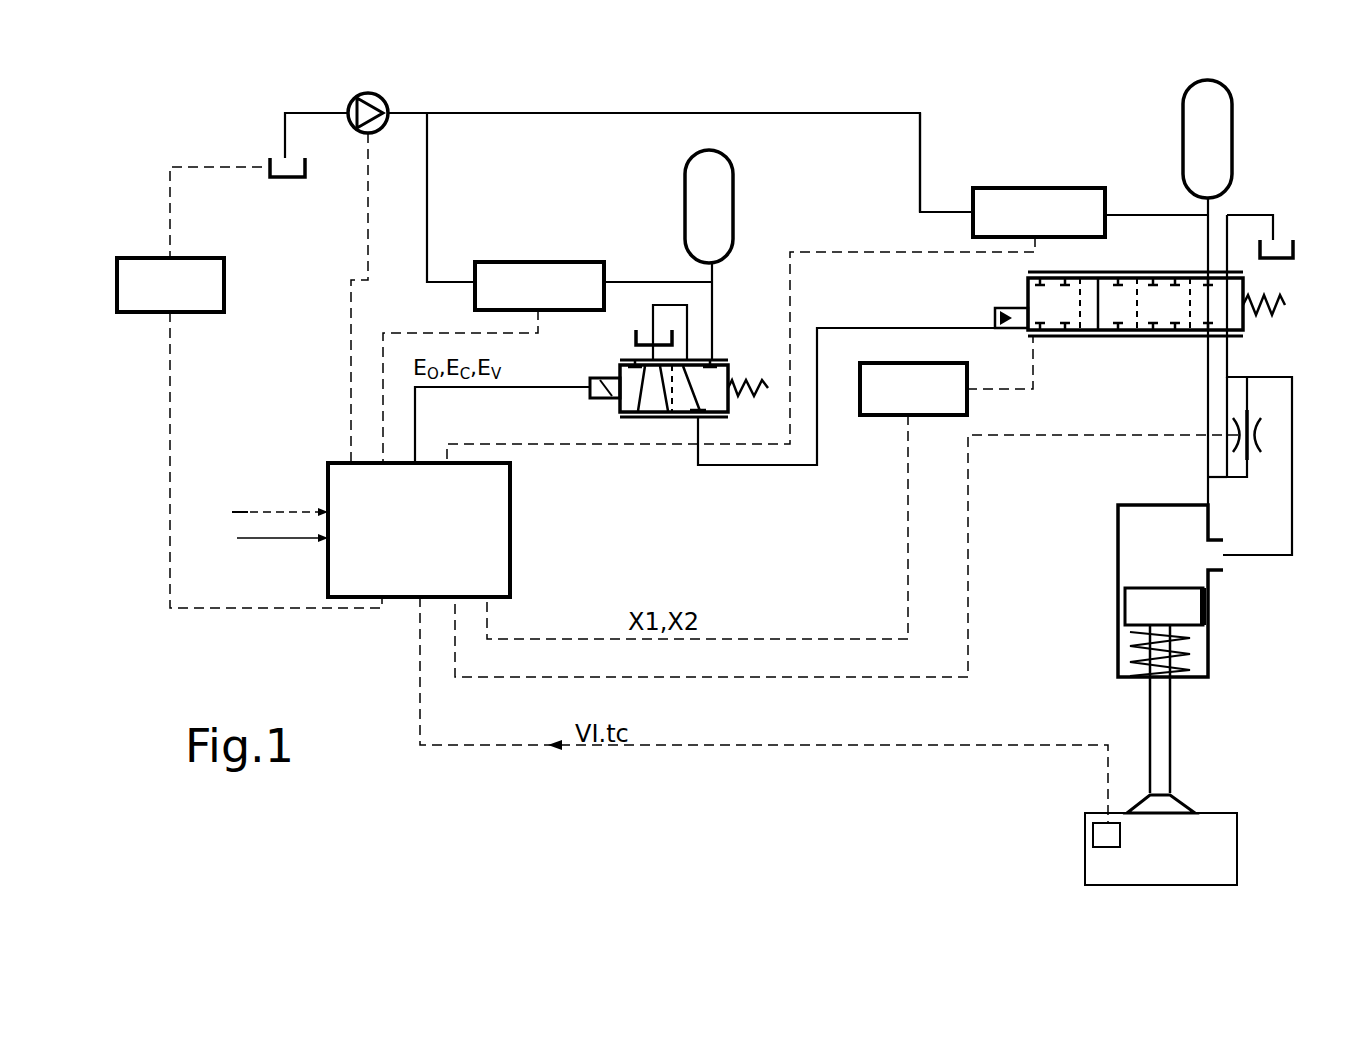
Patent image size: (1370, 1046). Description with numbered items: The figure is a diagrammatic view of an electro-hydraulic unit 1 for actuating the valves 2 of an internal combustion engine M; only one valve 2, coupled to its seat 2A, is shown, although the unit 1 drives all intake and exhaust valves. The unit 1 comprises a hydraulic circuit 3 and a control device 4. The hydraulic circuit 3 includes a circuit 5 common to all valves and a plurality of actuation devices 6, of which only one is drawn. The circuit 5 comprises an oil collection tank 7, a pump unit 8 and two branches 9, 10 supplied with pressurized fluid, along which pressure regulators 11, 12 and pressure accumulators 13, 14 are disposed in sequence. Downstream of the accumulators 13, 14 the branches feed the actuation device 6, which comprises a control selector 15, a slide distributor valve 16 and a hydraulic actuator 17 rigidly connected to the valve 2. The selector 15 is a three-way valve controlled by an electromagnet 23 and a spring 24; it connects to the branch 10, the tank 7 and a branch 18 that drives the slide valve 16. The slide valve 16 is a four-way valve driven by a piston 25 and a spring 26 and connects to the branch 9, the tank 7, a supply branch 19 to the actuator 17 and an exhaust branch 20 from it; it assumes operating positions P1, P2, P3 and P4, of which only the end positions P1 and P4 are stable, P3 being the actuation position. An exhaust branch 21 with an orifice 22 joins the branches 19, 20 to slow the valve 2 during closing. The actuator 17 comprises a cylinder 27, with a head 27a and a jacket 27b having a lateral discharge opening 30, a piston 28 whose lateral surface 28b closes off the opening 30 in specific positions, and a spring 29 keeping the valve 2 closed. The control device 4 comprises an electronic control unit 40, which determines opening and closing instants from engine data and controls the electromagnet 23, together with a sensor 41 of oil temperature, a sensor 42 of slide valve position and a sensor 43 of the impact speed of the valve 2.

The electro-hydraulic unit 1 is at (445, 765).
The valve 2 is at (1193, 800).
The seat 2A is at (1175, 823).
The hydraulic circuit 3 is at (930, 128).
The control device 4 is at (408, 700).
The circuit 5 is at (656, 108).
The actuation device 6 is at (1302, 512).
The oil collection tank 7 is at (305, 185).
The pump unit 8 is at (390, 100).
The branch 9 is at (815, 112).
The branch 10 is at (427, 240).
The pressure regulator 11 is at (1040, 215).
The pressure regulator 12 is at (497, 282).
The pressure accumulator 13 is at (1210, 128).
The pressure accumulator 14 is at (712, 216).
The control selector 15 is at (665, 452).
The slide distributor valve 16 is at (1132, 345).
The hydraulic actuator 17 is at (1108, 568).
The branch 18 is at (760, 465).
The supply branch 19 is at (1208, 465).
The exhaust branch 20 is at (1292, 458).
The exhaust branch 21 is at (1228, 480).
The orifice 22 is at (1270, 432).
The electromagnet 23 is at (608, 392).
The spring 24 is at (694, 367).
The piston 25 is at (1012, 332).
The spring 26 is at (1287, 306).
The cylinder 27 is at (1114, 524).
The head 27a is at (1140, 504).
The jacket 27b is at (1117, 556).
The piston 28 is at (1145, 604).
The lateral surface 28b is at (1212, 608).
The spring 29 is at (1190, 660).
The lateral discharge opening 30 is at (1222, 556).
The electronic control unit 40 is at (515, 555).
The sensor 41 is at (178, 285).
The sensor 42 is at (900, 392).
The sensor 43 is at (1105, 835).
The internal combustion engine M is at (1212, 853).
The operating position P1 is at (1232, 325).
The operating position P2 is at (1175, 307).
The operating position P3 is at (1120, 305).
The operating position P4 is at (1045, 300).